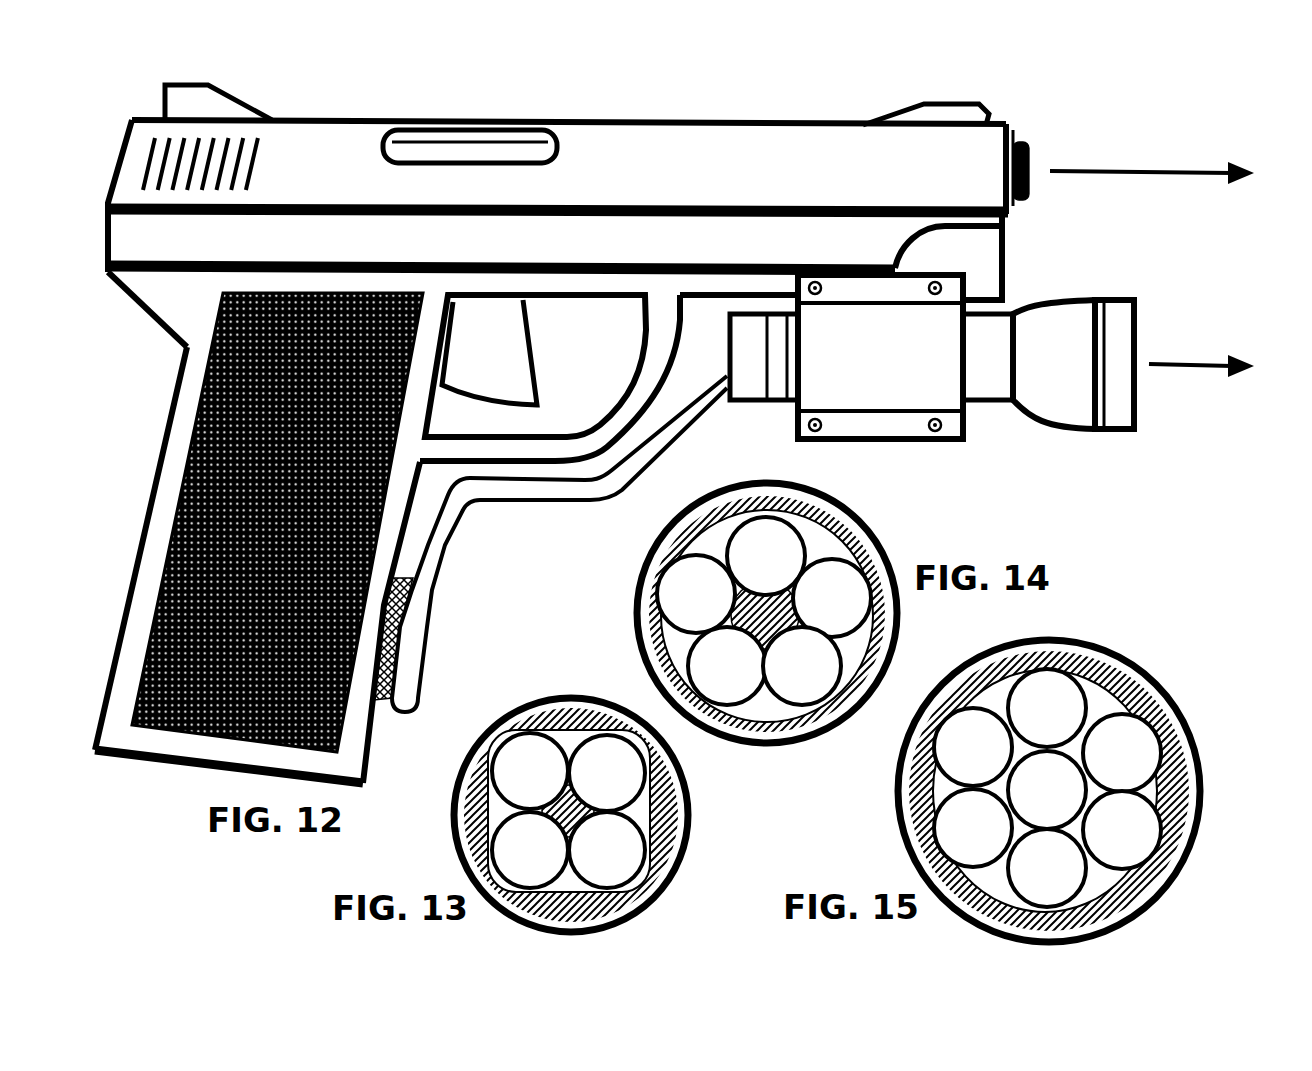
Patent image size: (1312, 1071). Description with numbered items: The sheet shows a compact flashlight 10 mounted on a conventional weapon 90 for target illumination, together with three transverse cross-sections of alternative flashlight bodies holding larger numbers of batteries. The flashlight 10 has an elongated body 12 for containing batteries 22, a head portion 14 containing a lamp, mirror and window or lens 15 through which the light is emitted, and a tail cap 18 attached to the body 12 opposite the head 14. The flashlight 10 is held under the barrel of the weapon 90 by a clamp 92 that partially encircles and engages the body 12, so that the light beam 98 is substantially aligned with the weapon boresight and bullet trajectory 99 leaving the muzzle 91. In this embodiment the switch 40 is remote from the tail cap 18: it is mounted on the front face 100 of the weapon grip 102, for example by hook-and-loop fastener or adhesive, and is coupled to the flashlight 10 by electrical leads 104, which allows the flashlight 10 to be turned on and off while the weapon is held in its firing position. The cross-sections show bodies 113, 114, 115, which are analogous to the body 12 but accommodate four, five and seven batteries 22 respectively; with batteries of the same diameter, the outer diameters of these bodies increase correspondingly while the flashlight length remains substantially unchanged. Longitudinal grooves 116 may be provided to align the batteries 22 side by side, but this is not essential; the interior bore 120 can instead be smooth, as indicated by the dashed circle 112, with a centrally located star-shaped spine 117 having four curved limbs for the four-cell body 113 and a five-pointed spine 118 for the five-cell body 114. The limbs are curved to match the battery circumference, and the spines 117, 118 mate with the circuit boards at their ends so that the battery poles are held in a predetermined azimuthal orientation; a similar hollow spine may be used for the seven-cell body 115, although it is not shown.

In FIG. 12, the compact flashlight 10 is at (998, 392).
In FIG. 12, the elongated body 12 is at (988, 357).
In FIG. 12, the head portion 14 is at (1106, 390).
In FIG. 12, the window and/or lens 15 is at (1137, 405).
In FIG. 12, the tail cap 18 is at (748, 383).
In FIG. 14, the batteries 22 is at (817, 679).
In FIG. 13, the batteries 22 is at (622, 862).
In FIG. 15, the batteries 22 is at (1062, 881).
In FIG. 12, the switch 40 is at (440, 642).
In FIG. 12, the weapon 90 is at (674, 468).
In FIG. 12, the muzzle 91 is at (1031, 192).
In FIG. 12, the clamp 92 is at (1004, 380).
In FIG. 12, the light beam 98 is at (1188, 357).
In FIG. 12, the bullet trajectory 99 is at (1180, 168).
In FIG. 12, the front face 100 is at (385, 730).
In FIG. 12, the weapon grip 102 is at (160, 447).
In FIG. 12, the electrical leads 104 is at (559, 544).
In FIG. 14, the dashed circle / inner bore 112 is at (893, 663).
In FIG. 13, the dashed circle / inner bore 112 is at (690, 817).
In FIG. 13, the body 113 is at (567, 800).
In FIG. 14, the body 114 is at (769, 628).
In FIG. 15, the body 115 is at (1012, 786).
In FIG. 14, the longitudinal grooves 116 is at (638, 593).
In FIG. 13, the longitudinal grooves 116 is at (494, 728).
In FIG. 15, the longitudinal grooves 116 is at (913, 840).
In FIG. 13, the star-shaped spine 117 is at (629, 862).
In FIG. 14, the spine 118 is at (783, 627).
In FIG. 14, the interior bore 120 is at (847, 512).
In FIG. 13, the interior bore 120 is at (456, 815).
In FIG. 15, the interior bore 120 is at (936, 789).